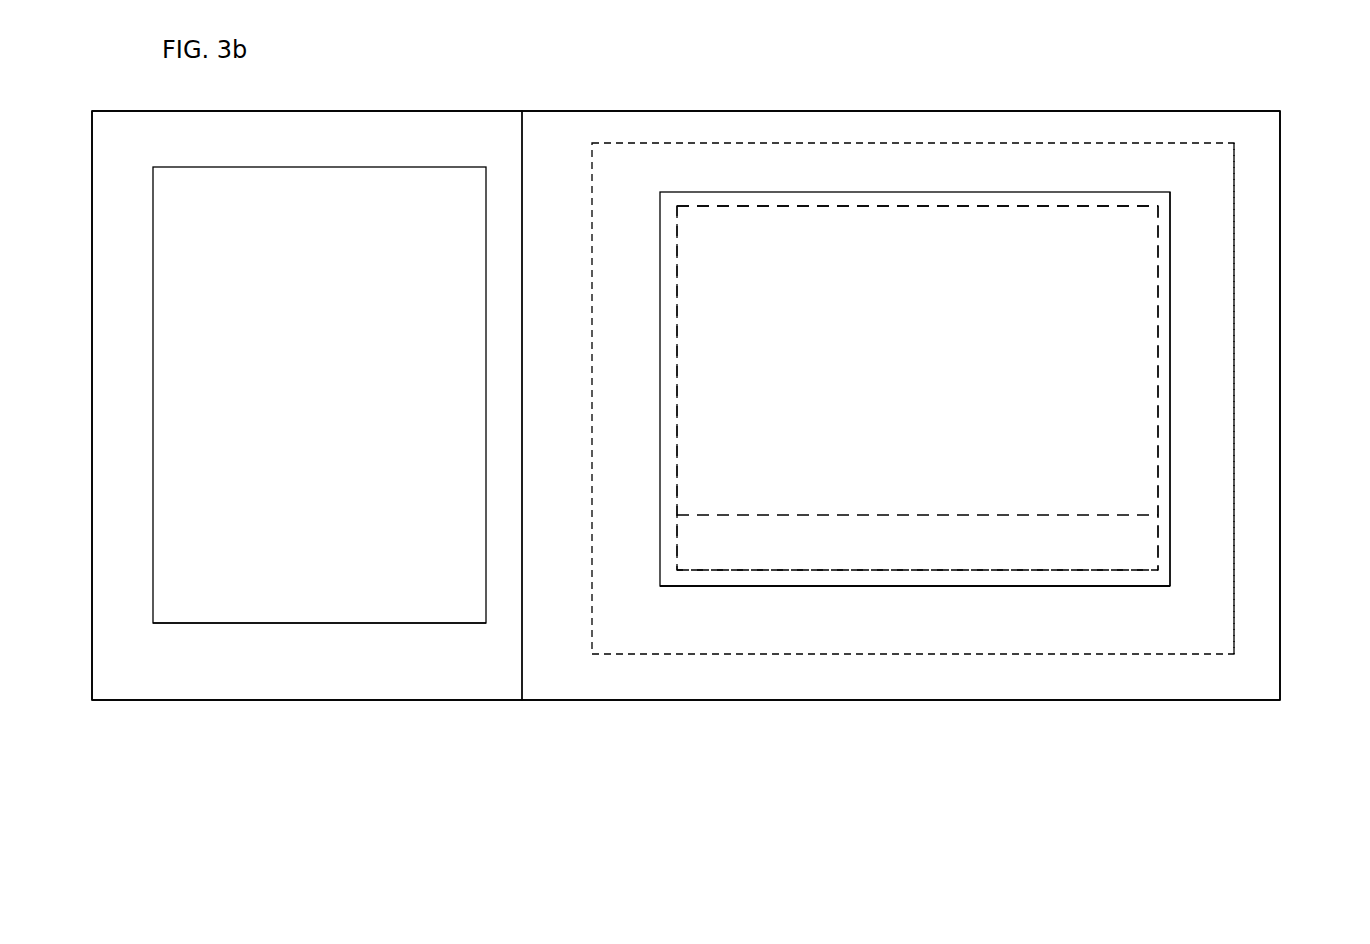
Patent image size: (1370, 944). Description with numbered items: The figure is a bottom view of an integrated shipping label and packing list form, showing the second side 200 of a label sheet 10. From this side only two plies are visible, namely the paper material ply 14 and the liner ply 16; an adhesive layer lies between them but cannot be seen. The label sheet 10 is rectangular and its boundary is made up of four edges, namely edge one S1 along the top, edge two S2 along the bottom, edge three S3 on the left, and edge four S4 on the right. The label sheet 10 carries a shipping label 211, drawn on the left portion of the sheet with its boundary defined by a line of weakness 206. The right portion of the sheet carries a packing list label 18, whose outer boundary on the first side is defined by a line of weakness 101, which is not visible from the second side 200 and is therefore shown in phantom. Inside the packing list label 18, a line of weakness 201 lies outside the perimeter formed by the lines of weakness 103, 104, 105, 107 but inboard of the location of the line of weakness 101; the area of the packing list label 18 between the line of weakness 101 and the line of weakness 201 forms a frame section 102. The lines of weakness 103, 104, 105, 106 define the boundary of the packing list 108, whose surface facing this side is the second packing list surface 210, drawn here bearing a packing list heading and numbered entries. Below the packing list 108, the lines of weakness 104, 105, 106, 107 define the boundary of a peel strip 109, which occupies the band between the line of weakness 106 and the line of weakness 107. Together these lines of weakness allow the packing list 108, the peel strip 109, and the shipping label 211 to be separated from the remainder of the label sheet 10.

The label sheet 10 is at (693, 83).
The paper material ply 14 is at (473, 688).
The liner ply 16 is at (945, 127).
The packing list label 18 is at (1155, 195).
The second side 200 is at (630, 110).
The shipping label 211 is at (388, 260).
The line of weakness 206 is at (366, 631).
The line of weakness 101 is at (1245, 567).
The frame section 102 is at (1195, 495).
The line of weakness 103 is at (900, 207).
The line of weakness 104 is at (1152, 367).
The line of weakness 105 is at (682, 376).
The line of weakness 106 is at (833, 510).
The line of weakness 107 is at (765, 571).
The packing list 108 is at (917, 244).
The peel strip 109 is at (832, 548).
The line of weakness 201 is at (1005, 590).
The second packing list surface 210 is at (937, 480).
The edge one S1 is at (1102, 102).
The edge two S2 is at (1172, 705).
The edge three S3 is at (94, 592).
The edge four S4 is at (1290, 392).